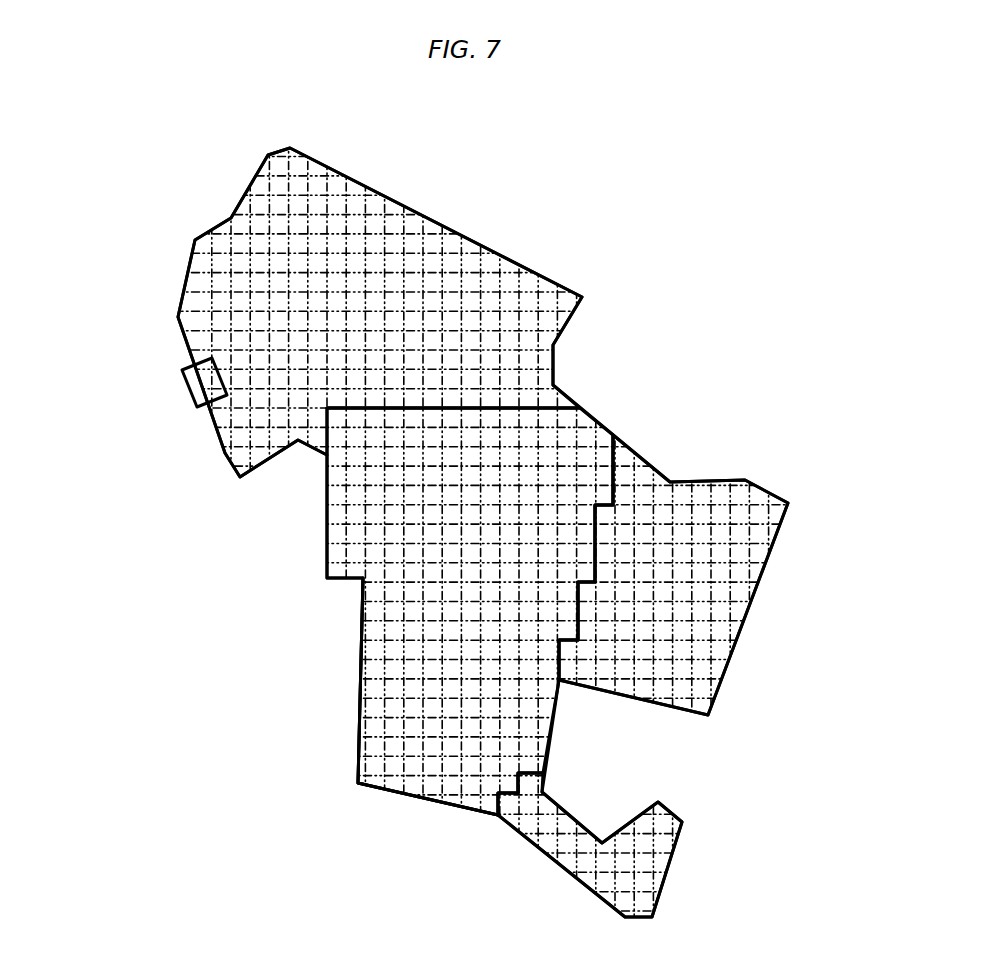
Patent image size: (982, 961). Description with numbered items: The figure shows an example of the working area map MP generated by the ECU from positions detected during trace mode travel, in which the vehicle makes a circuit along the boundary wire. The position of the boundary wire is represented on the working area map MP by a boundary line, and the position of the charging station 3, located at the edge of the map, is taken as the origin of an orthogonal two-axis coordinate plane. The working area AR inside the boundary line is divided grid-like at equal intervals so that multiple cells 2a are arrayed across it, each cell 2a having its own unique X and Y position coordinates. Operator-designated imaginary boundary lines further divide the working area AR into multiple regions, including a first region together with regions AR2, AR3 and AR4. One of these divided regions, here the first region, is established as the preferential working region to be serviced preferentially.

The working area map MP is at (557, 210).
The cell 2a is at (466, 252).
The working area AR is at (352, 513).
The second region AR2 is at (392, 682).
The third region AR3 is at (640, 878).
The fourth region AR4 is at (722, 560).
The charging station 3 is at (180, 375).